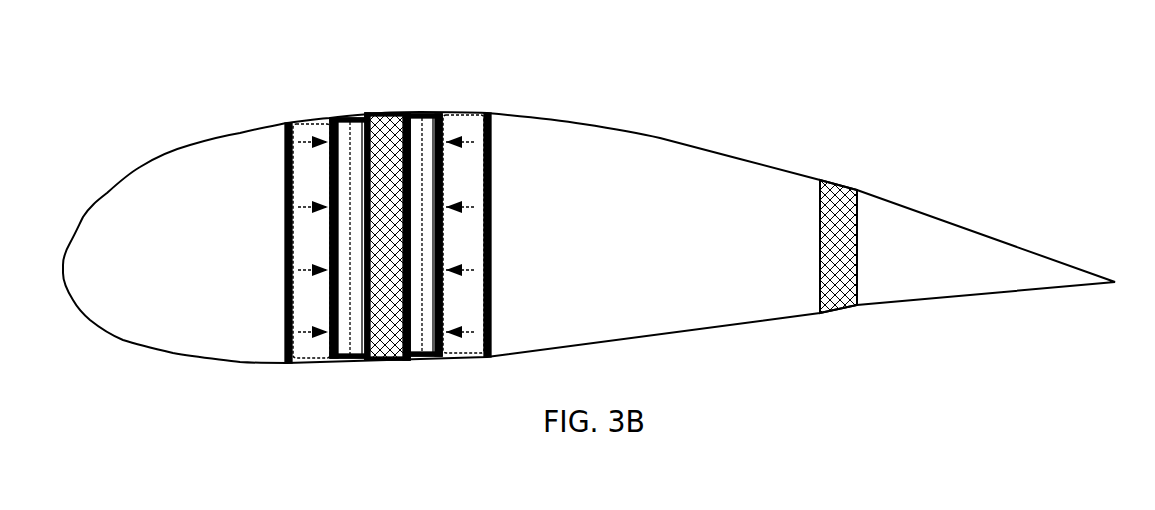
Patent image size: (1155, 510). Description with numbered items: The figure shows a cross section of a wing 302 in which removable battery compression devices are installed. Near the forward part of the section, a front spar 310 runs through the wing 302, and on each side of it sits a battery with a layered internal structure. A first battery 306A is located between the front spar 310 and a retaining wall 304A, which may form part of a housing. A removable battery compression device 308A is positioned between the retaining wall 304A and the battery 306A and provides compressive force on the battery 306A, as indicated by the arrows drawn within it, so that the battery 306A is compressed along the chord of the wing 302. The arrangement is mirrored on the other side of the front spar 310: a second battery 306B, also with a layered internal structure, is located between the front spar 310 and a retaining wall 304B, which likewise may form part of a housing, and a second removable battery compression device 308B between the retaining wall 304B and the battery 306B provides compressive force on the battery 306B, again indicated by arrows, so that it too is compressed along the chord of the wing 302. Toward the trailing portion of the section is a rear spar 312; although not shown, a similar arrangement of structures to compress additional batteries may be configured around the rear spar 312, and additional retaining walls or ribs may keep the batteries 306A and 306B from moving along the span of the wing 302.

The wing 302 is at (583, 124).
The retaining wall 304A is at (290, 180).
The retaining wall 304B is at (489, 182).
The battery 306A is at (349, 117).
The battery 306B is at (423, 113).
The removable battery compression device 308A is at (298, 122).
The removable battery compression device 308B is at (473, 115).
The front spar 310 is at (373, 113).
The rear spar 312 is at (857, 218).